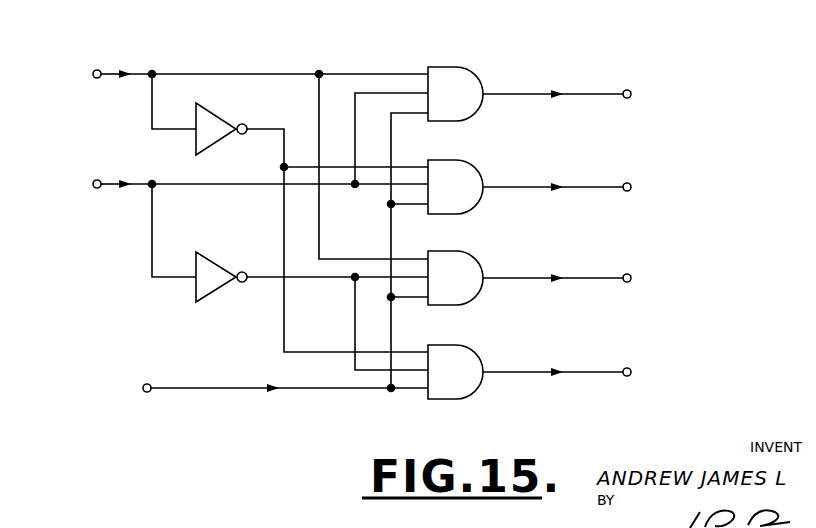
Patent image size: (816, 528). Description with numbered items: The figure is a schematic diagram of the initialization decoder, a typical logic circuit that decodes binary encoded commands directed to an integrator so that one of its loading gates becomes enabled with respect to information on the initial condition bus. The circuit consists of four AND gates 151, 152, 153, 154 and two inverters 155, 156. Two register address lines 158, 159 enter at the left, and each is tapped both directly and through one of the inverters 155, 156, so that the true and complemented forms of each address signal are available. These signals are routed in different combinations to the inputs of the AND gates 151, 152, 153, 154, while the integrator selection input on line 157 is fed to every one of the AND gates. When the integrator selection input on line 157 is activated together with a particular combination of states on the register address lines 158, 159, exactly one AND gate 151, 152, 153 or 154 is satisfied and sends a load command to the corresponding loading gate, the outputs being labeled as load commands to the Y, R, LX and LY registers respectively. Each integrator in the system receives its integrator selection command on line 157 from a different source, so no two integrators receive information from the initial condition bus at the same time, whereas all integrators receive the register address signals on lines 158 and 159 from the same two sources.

The AND gate 151 is at (477, 67).
The AND gate 152 is at (474, 160).
The AND gate 153 is at (477, 252).
The AND gate 154 is at (477, 345).
The inverter 155 is at (221, 113).
The inverter 156 is at (214, 254).
The integrator selection input line 157 is at (150, 392).
The register address line 158 is at (100, 68).
The register address line 159 is at (100, 179).